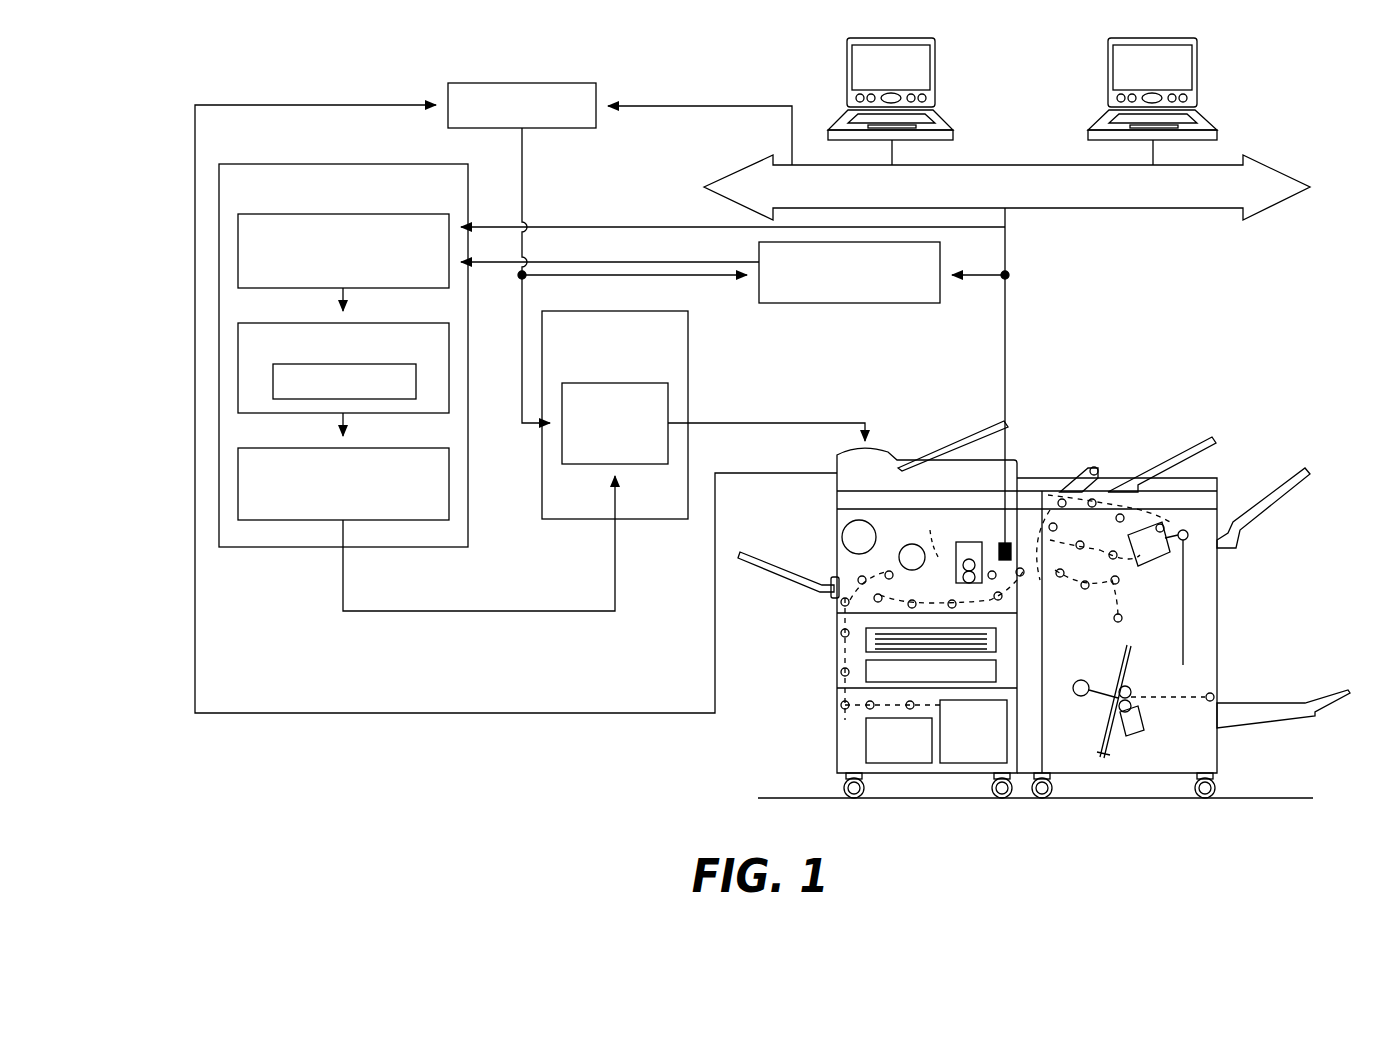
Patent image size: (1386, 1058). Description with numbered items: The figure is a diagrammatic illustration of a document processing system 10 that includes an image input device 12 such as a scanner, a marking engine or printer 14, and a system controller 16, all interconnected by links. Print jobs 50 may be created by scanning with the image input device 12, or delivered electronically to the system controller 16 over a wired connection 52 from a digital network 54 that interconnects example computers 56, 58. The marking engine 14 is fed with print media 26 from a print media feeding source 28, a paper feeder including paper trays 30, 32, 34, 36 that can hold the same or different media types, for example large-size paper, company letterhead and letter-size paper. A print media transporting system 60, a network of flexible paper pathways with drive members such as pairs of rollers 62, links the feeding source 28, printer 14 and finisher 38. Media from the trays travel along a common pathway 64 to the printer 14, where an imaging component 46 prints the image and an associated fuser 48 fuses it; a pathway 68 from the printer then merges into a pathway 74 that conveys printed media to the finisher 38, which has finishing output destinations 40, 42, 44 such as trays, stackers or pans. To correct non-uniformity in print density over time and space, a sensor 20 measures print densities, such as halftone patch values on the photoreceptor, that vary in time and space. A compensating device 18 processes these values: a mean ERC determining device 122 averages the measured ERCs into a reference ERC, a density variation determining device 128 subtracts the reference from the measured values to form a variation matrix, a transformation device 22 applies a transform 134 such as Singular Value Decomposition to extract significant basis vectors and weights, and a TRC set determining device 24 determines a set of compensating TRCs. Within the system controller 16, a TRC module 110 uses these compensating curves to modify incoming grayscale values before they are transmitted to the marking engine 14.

The document processing system 10 is at (1160, 362).
The image input device 12 is at (1030, 417).
The marking engine 14 is at (826, 540).
The system controller 16 is at (688, 337).
The compensating device 18 is at (331, 164).
The sensor 20 is at (992, 545).
The transformation device 22 is at (449, 365).
The TRC set determining device 24 is at (449, 478).
The print media 26 is at (975, 645).
The print media feeding source 28 is at (840, 633).
The paper tray 30 is at (897, 765).
The paper tray 32 is at (972, 765).
The paper tray 34 is at (866, 640).
The paper tray 36 is at (866, 672).
The finisher 38 is at (1258, 596).
The finishing output destination 40 is at (1270, 492).
The finishing output destination 42 is at (1268, 700).
The finishing output destination 44 is at (1175, 455).
The imaging component 46 is at (912, 544).
The fuser 48 is at (956, 573).
The print job 50 is at (596, 128).
The wired connection 52 is at (666, 106).
The digital network 54 is at (1055, 208).
The computer 56 is at (935, 75).
The computer 58 is at (1108, 85).
The print media transporting system 60 is at (1035, 600).
The pairs of rollers 62 is at (846, 575).
The pathway 64 is at (871, 534).
The pathway 68 is at (937, 537).
The pathway 74 is at (1052, 490).
The TRC module 110 is at (642, 464).
The mean ERC determining device 122 is at (849, 303).
The density variation determining device 128 is at (449, 218).
The transform 134 is at (416, 380).